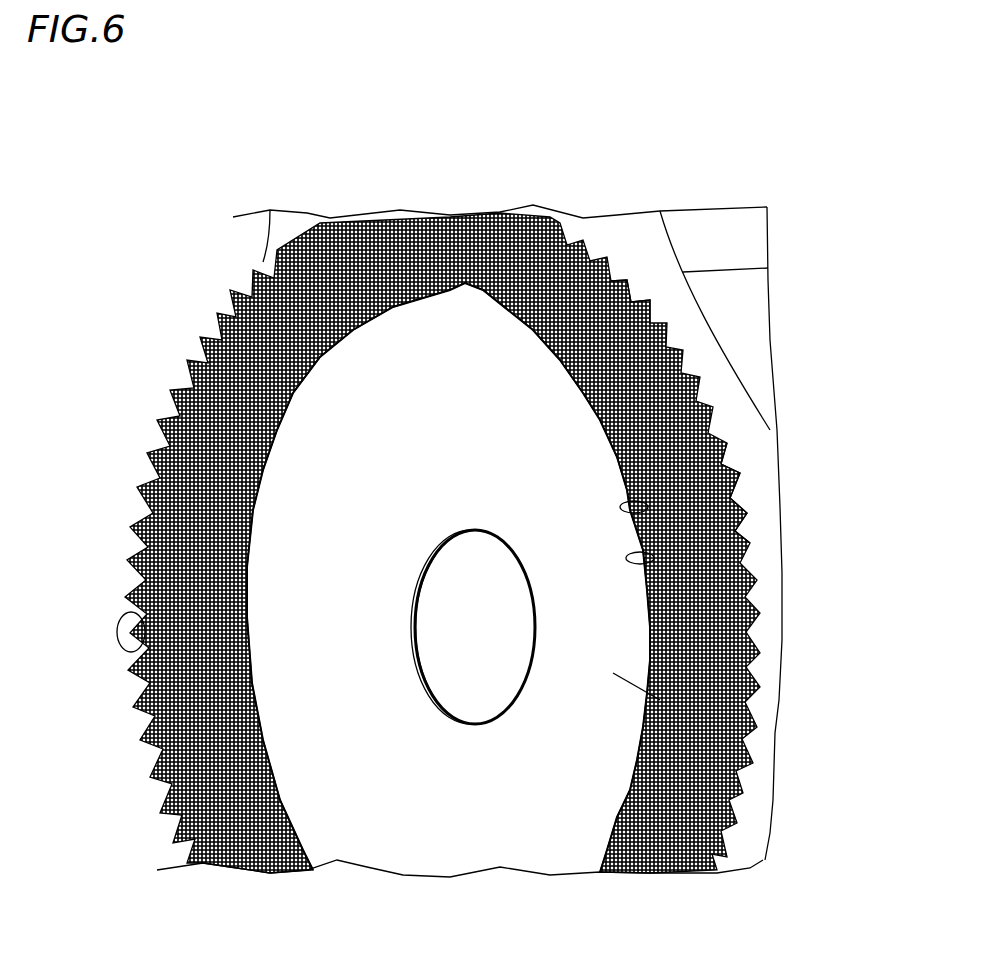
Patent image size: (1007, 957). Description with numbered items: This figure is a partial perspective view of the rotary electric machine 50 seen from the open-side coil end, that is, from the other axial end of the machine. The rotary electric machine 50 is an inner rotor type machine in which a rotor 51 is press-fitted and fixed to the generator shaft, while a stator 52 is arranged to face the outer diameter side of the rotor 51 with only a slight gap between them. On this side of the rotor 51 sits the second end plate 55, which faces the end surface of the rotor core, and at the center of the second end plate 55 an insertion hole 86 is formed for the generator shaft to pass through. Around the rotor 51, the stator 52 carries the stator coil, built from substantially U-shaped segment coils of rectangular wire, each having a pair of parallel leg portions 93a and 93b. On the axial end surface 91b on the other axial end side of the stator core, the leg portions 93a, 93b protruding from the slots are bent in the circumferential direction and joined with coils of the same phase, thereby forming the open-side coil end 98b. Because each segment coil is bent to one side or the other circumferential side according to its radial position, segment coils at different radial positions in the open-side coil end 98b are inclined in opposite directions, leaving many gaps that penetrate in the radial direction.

The rotary electric machine 50 is at (684, 117).
The rotor 51 is at (440, 322).
The open-side coil end 98b is at (623, 260).
The axial end surface 91b is at (687, 310).
The stator 52 is at (738, 413).
The leg portion 93a is at (625, 503).
The leg portion 93b is at (640, 558).
The second end plate 55 is at (613, 673).
The insertion hole 86 is at (443, 692).